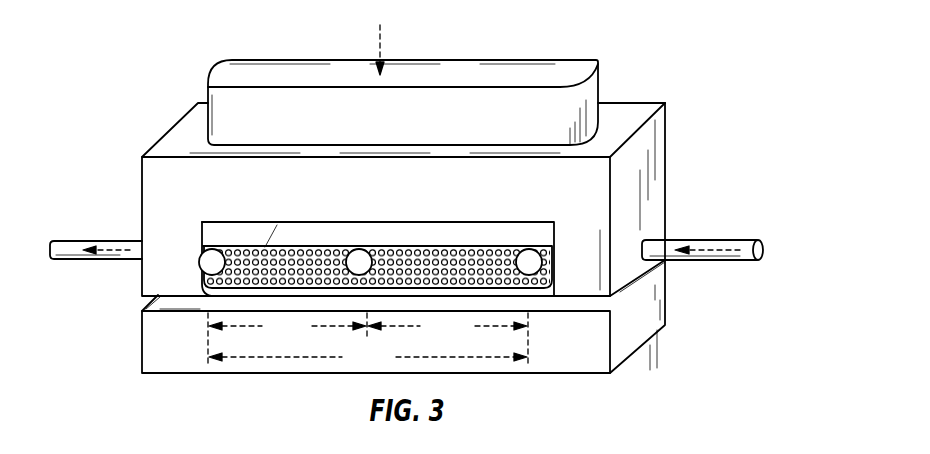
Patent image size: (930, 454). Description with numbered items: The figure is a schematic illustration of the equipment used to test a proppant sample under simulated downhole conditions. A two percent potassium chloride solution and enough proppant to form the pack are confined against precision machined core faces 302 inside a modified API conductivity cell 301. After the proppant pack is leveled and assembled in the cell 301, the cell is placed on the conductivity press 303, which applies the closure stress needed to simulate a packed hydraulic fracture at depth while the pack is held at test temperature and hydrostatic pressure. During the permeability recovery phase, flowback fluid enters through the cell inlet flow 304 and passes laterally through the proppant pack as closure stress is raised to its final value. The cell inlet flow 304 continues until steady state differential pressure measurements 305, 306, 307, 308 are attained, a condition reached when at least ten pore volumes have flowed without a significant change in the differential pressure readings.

The modified API conductivity cell 301 is at (172, 132).
The precision machined core faces 302 is at (554, 258).
The conductivity press 303 is at (418, 58).
The cell inlet flow 304 is at (745, 240).
The differential pressure measurement 305 is at (218, 236).
The differential pressure measurement 306 is at (447, 326).
The differential pressure measurement 307 is at (287, 326).
The differential pressure measurement 308 is at (368, 356).